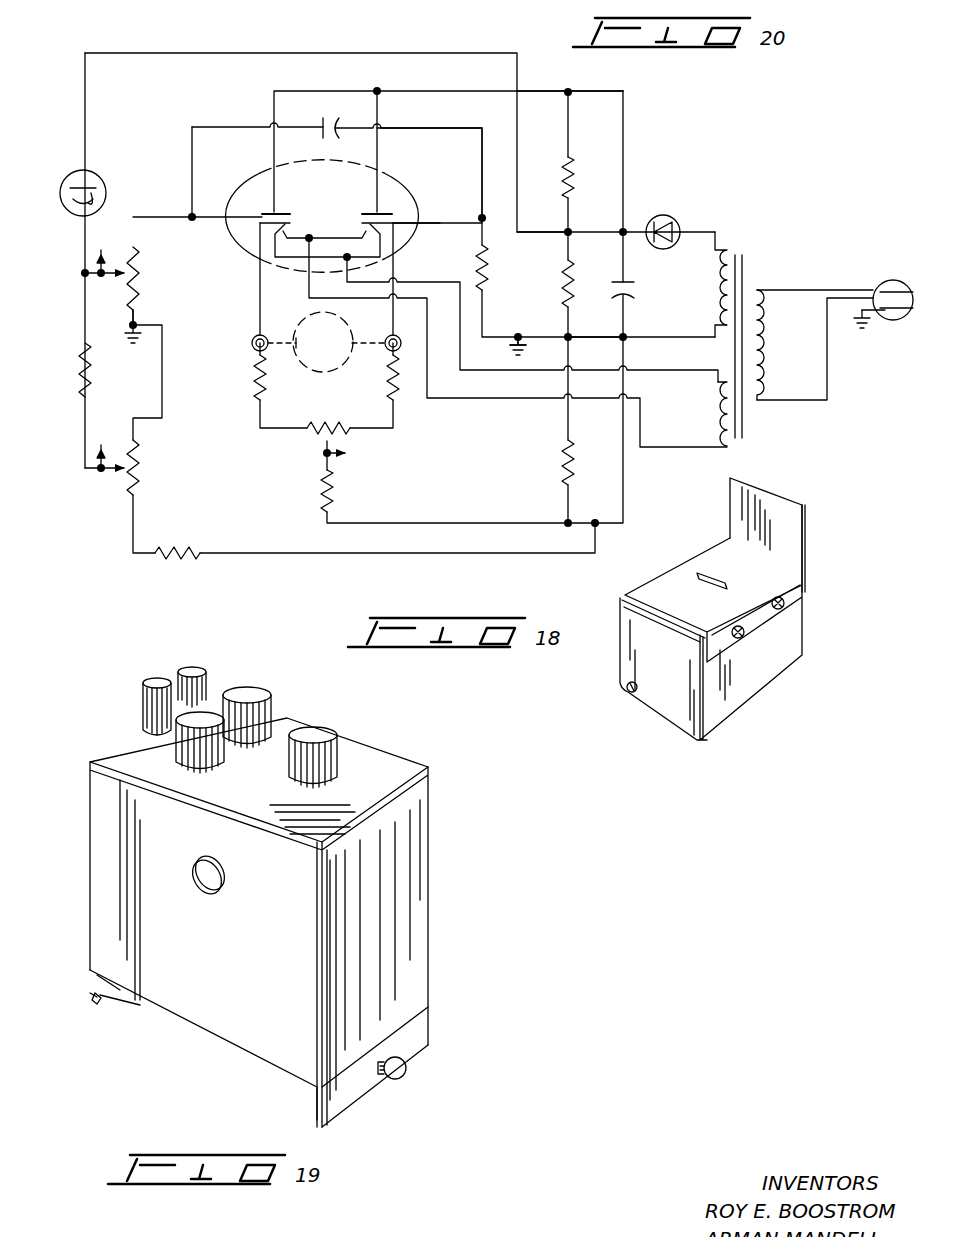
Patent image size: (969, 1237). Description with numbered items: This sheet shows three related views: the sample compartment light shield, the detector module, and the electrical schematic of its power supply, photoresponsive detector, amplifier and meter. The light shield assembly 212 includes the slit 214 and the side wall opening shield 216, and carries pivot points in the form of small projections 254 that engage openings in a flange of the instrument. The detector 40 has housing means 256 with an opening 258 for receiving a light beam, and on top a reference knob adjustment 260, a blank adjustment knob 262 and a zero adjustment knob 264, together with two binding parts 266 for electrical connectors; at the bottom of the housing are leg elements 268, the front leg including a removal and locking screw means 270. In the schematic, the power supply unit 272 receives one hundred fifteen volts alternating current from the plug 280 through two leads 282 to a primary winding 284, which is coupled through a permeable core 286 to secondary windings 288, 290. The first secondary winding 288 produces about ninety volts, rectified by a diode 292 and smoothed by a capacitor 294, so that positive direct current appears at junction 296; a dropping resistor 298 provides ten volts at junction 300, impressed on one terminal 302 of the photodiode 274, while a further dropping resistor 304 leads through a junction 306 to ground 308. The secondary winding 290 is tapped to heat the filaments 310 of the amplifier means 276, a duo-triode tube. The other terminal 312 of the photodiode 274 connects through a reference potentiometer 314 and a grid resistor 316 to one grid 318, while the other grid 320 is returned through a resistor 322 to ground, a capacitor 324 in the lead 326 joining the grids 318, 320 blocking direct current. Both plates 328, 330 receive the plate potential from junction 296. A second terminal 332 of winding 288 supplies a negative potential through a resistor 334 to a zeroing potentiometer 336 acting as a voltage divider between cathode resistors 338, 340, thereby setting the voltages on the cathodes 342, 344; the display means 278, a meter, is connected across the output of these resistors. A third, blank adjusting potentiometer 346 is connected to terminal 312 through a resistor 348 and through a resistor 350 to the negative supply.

In FIG. 19, the detector 40 is at (458, 928).
In FIG. 18, the light shield assembly 212 is at (748, 690).
In FIG. 18, the slit 214 is at (722, 583).
In FIG. 18, the side wall opening shield 216 is at (803, 542).
In FIG. 18, the small projections 254 is at (630, 695).
In FIG. 19, the housing means 256 is at (265, 1018).
In FIG. 19, the opening 258 is at (212, 895).
In FIG. 19, the reference knob adjustment 260 is at (330, 750).
In FIG. 19, the blank adjustment knob 262 is at (206, 718).
In FIG. 19, the zero adjustment knob 264 is at (255, 692).
In FIG. 19, the binding posts 266 is at (158, 678).
In FIG. 19, the leg elements 268 is at (97, 1005).
In FIG. 19, the removal and locking screw means 270 is at (406, 1070).
In FIG. 20, the power supply unit 272 is at (752, 238).
In FIG. 20, the photodiode 274 is at (63, 160).
In FIG. 20, the amplifier means 276 is at (422, 200).
In FIG. 20, the display means 278 is at (335, 362).
In FIG. 20, the plug 280 is at (892, 288).
In FIG. 20, the leads 282 is at (795, 290).
In FIG. 20, the primary winding 284 is at (768, 375).
In FIG. 20, the permeable core 286 is at (745, 430).
In FIG. 20, the first secondary winding 288 is at (732, 262).
In FIG. 20, the secondary winding 290 is at (727, 440).
In FIG. 20, the diode 292 is at (675, 220).
In FIG. 20, the capacitor 294 is at (630, 282).
In FIG. 20, the junction 296 is at (572, 90).
In FIG. 20, the dropping resistor 298 is at (572, 180).
In FIG. 20, the junction 300 is at (572, 232).
In FIG. 20, the terminal 302 is at (97, 185).
In FIG. 20, the dropping resistor 304 is at (560, 300).
In FIG. 20, the junction 306 is at (572, 337).
In FIG. 20, the ground 308 is at (528, 320).
In FIG. 20, the filaments 310 is at (375, 252).
In FIG. 20, the terminal 312 is at (105, 195).
In FIG. 20, the reference potentiometer 314 is at (98, 280).
In FIG. 20, the grid resistor 316 is at (142, 282).
In FIG. 20, the grid 318 is at (292, 212).
In FIG. 20, the grid 320 is at (405, 212).
In FIG. 20, the resistor 322 is at (490, 270).
In FIG. 20, the capacitor 324 is at (345, 120).
In FIG. 20, the lead 326 is at (452, 128).
In FIG. 20, the plate 328 is at (286, 210).
In FIG. 20, the plate 330 is at (360, 210).
In FIG. 20, the second terminal 332 is at (620, 345).
In FIG. 20, the resistor 334 is at (334, 498).
In FIG. 20, the zeroing potentiometer 336 is at (348, 455).
In FIG. 20, the cathode resistor 338 is at (254, 400).
In FIG. 20, the cathode resistor 340 is at (395, 398).
In FIG. 20, the cathode 342 is at (268, 240).
In FIG. 20, the cathode 344 is at (385, 245).
In FIG. 20, the blank adjusting potentiometer 346 is at (152, 452).
In FIG. 20, the resistor 348 is at (85, 400).
In FIG. 20, the resistor 350 is at (178, 550).